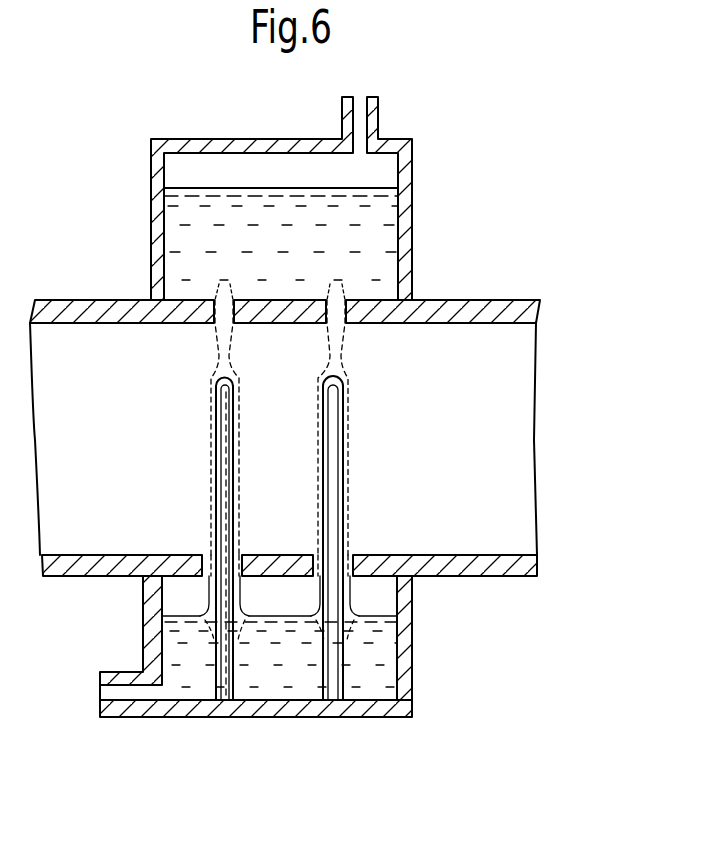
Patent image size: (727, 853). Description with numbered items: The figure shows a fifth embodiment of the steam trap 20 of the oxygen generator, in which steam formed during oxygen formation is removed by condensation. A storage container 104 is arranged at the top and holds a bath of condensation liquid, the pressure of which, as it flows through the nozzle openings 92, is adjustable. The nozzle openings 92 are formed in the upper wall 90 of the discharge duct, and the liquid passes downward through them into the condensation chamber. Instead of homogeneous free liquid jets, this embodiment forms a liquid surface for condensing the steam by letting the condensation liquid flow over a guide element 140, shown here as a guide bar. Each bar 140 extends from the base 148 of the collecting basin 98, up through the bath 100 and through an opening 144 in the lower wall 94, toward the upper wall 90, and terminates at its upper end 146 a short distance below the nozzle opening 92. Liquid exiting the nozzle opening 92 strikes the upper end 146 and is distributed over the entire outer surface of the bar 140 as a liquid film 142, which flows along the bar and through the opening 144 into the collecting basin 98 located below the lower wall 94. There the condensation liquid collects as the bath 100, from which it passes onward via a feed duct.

The steam trap 20 is at (465, 375).
The upper wall 90 is at (427, 308).
The nozzle openings 92 is at (236, 286).
The lower wall 94 is at (467, 565).
The collecting basin 98 is at (372, 605).
The bath 100 is at (382, 673).
The storage container 104 is at (173, 168).
The guide element 140 is at (338, 458).
The liquid film 142 is at (350, 414).
The opening 144 is at (359, 555).
The upper end 146 is at (341, 371).
The base 148 is at (227, 706).